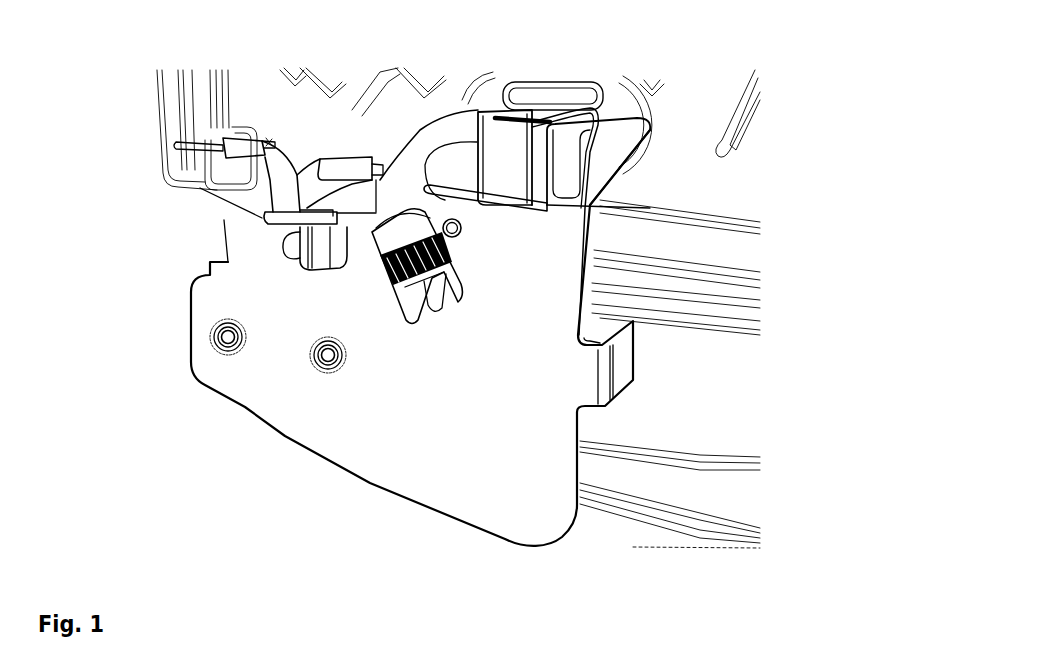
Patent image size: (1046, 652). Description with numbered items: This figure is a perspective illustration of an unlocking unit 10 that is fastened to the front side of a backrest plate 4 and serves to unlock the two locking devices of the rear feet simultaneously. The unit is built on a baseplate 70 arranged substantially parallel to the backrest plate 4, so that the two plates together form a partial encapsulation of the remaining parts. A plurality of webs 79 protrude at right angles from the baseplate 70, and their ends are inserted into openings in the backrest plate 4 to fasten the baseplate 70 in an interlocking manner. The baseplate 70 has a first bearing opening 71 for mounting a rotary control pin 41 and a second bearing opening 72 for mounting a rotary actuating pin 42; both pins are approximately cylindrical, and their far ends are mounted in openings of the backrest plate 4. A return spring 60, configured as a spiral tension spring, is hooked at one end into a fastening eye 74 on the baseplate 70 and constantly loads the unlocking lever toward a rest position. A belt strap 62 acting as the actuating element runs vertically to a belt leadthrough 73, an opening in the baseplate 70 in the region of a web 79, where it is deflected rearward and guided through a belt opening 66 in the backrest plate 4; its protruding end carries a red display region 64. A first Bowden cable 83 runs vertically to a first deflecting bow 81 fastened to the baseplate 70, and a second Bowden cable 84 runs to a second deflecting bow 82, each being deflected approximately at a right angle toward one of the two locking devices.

The backrest plate 4 is at (725, 422).
The unlocking unit 10 is at (157, 356).
The rotary control pin 41 is at (226, 340).
The rotary actuating pin 42 is at (322, 358).
The return spring 60 is at (413, 262).
The belt strap 62 is at (497, 162).
The display region 64 is at (534, 110).
The belt opening 66 is at (592, 118).
The baseplate 70 is at (527, 292).
The first bearing opening 71 is at (238, 343).
The second bearing opening 72 is at (334, 361).
The belt leadthrough 73 is at (550, 207).
The fastening eye 74 is at (461, 229).
The webs 79 is at (590, 143).
The first deflecting bow 81 is at (235, 155).
The second deflecting bow 82 is at (293, 185).
The first Bowden cable 83 is at (180, 140).
The second Bowden cable 84 is at (377, 160).